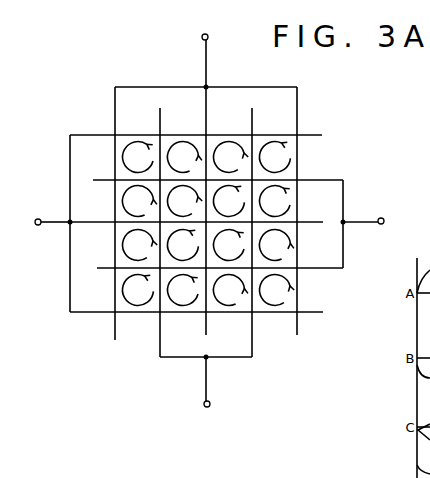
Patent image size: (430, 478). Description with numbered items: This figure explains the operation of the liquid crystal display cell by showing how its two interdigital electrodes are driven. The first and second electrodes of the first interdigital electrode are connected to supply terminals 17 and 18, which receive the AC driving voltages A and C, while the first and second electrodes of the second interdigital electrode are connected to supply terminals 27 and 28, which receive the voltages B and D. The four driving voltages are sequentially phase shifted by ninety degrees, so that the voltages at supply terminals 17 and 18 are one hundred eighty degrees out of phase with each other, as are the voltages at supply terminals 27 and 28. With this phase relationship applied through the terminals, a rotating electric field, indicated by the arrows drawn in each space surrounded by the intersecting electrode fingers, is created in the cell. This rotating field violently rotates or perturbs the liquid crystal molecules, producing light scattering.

The supply terminal 17 is at (208, 37).
The supply terminal 18 is at (210, 404).
The supply terminal 27 is at (38, 225).
The supply terminal 28 is at (381, 224).